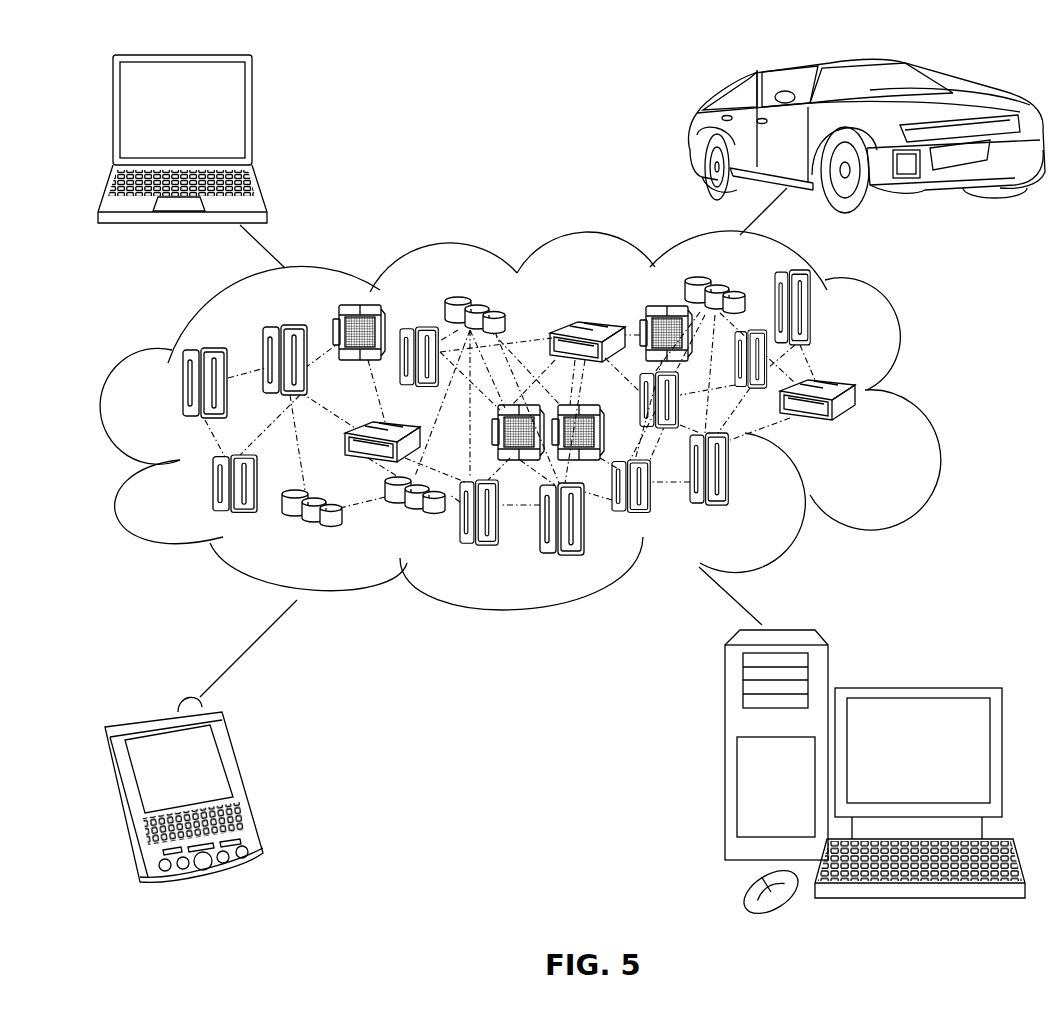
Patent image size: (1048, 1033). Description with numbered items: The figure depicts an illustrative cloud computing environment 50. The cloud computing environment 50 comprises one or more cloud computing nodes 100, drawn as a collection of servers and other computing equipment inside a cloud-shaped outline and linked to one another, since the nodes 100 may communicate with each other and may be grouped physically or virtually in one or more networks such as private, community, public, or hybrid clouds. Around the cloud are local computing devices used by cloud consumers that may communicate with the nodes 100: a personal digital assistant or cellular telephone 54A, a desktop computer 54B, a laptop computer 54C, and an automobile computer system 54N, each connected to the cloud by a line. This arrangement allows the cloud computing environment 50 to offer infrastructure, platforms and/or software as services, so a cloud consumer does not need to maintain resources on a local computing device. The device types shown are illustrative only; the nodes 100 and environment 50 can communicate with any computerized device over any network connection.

The cloud computing environment 50 is at (915, 393).
The cloud computing nodes 100 is at (858, 427).
The personal digital assistant or cellular telephone 54A is at (242, 782).
The desktop computer 54B is at (916, 687).
The laptop computer 54C is at (252, 120).
The automobile computer system 54N is at (697, 135).